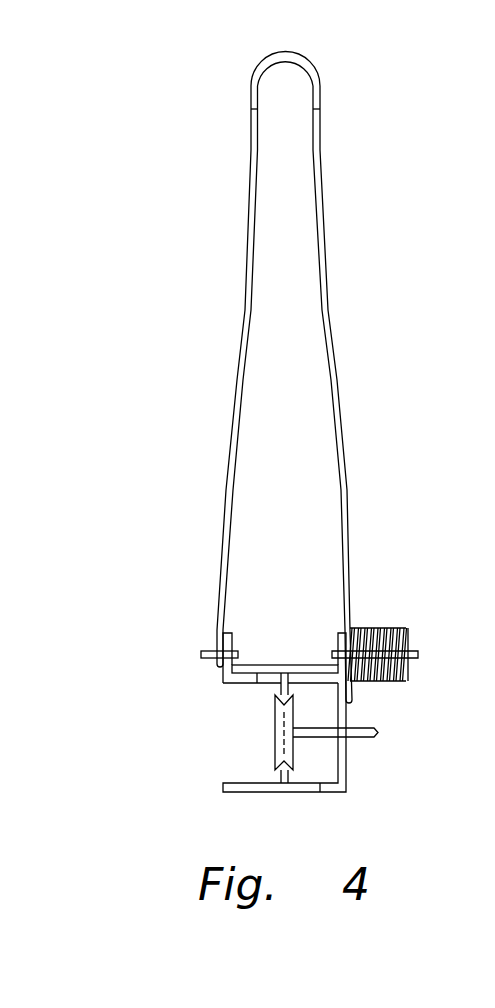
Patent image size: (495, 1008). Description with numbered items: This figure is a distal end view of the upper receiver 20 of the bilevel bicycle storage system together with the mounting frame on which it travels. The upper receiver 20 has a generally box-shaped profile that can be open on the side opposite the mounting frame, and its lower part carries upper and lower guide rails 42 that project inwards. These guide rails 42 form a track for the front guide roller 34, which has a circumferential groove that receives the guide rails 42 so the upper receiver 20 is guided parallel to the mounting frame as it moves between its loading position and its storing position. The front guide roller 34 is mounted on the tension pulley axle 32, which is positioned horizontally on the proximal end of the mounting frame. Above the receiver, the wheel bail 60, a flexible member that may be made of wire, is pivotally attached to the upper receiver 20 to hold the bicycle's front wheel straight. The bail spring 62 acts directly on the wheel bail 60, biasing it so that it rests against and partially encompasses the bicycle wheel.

The wheel bail 60 is at (333, 343).
The bail spring 62 is at (372, 627).
The upper receiver 20 is at (350, 702).
The guide rails 42 is at (281, 692).
The front guide roller 34 is at (275, 731).
The tension pulley axle 32 is at (360, 737).